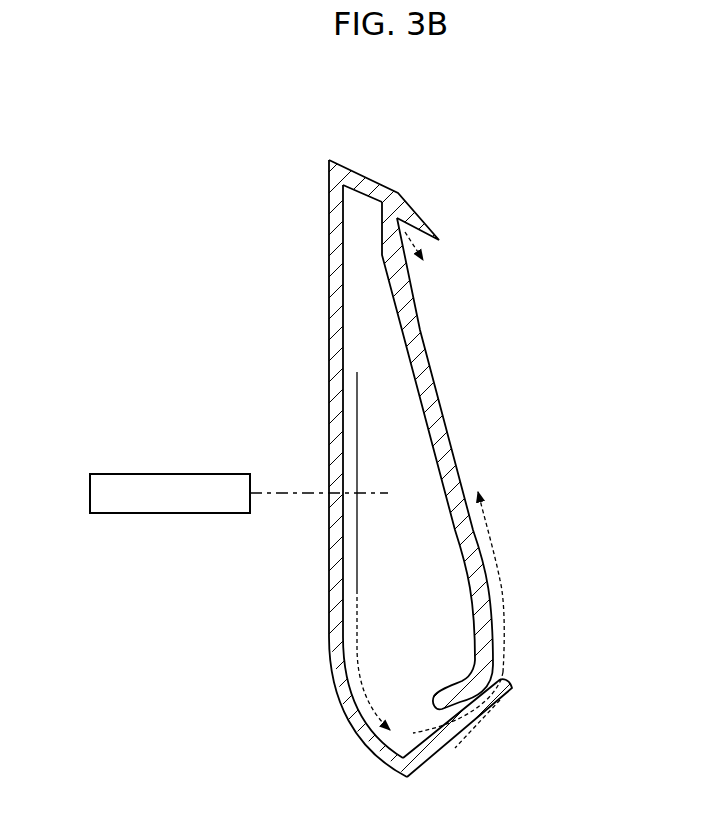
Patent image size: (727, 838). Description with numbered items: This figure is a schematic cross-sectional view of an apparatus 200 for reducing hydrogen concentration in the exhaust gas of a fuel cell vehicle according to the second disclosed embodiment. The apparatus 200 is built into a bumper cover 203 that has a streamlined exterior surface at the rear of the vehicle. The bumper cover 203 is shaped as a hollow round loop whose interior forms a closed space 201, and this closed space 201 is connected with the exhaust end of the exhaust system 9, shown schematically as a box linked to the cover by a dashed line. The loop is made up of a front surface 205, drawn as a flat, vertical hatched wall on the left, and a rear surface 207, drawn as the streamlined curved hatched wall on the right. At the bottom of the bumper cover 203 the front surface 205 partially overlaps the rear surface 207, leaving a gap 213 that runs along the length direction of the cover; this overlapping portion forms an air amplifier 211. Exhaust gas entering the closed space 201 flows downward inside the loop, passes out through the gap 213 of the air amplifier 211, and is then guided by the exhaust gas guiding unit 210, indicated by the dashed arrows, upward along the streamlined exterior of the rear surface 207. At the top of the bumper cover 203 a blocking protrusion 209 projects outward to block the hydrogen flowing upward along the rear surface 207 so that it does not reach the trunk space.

The exhaust system 9 is at (90, 493).
The apparatus for reducing hydrogen concentration 200 is at (388, 107).
The closed space 201 is at (384, 446).
The bumper cover 203 is at (229, 323).
The front surface 205 is at (337, 391).
The rear surface 207 is at (405, 327).
The blocking protrusion 209 is at (412, 217).
The exhaust gas guiding unit 210 is at (464, 335).
The air amplifier 211 is at (505, 669).
The gap 213 is at (496, 705).